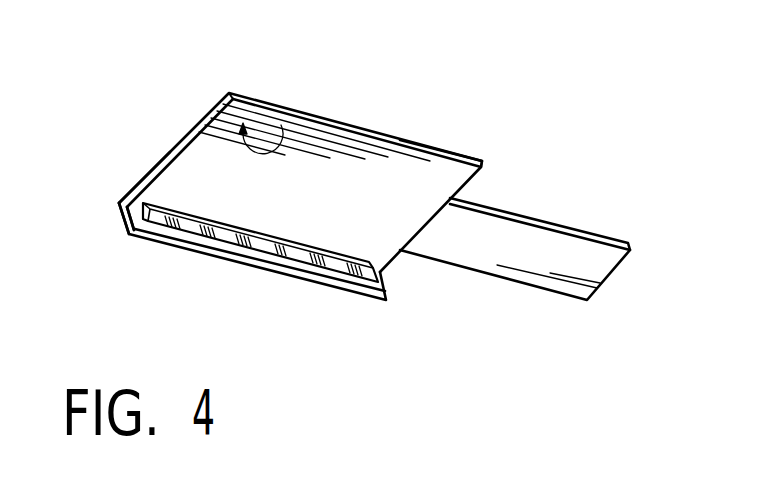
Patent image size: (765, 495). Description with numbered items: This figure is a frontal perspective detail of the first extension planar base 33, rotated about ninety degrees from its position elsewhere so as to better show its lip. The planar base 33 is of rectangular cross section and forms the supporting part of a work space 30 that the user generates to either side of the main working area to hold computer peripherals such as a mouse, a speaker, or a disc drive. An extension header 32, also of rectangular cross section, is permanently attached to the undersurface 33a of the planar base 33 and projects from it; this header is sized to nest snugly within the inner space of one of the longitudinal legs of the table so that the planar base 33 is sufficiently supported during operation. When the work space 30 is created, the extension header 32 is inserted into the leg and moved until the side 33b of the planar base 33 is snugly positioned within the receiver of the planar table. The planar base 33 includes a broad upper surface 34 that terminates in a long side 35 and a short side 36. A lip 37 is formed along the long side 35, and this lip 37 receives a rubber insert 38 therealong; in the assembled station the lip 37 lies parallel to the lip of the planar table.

The work space 30 is at (352, 196).
The extension header 32 is at (543, 220).
The first extension planar base 33 is at (278, 196).
The undersurface 33a is at (218, 101).
The side 33b is at (255, 286).
The broad upper surface 34 is at (281, 125).
The long side 35 is at (157, 167).
The short side 36 is at (442, 150).
The lip 37 is at (123, 220).
The rubber insert 38 is at (299, 263).